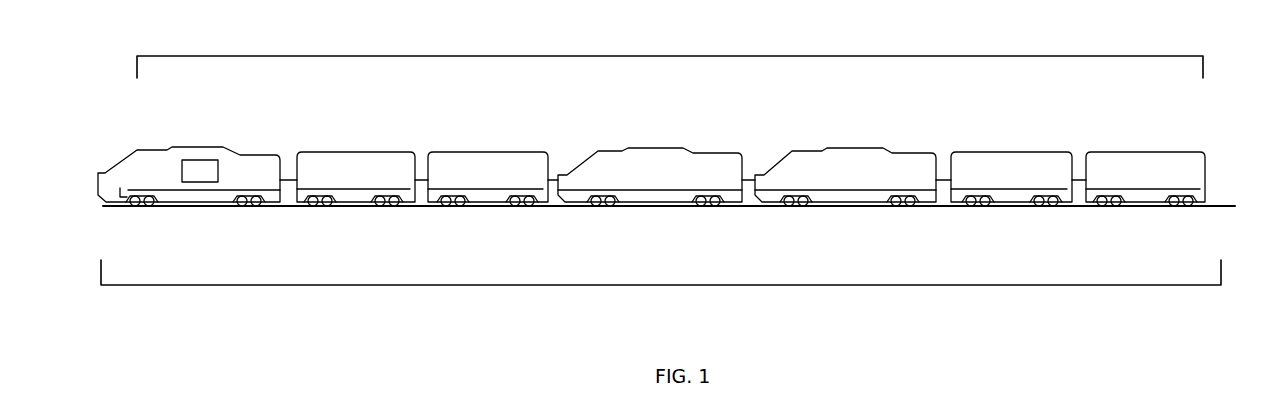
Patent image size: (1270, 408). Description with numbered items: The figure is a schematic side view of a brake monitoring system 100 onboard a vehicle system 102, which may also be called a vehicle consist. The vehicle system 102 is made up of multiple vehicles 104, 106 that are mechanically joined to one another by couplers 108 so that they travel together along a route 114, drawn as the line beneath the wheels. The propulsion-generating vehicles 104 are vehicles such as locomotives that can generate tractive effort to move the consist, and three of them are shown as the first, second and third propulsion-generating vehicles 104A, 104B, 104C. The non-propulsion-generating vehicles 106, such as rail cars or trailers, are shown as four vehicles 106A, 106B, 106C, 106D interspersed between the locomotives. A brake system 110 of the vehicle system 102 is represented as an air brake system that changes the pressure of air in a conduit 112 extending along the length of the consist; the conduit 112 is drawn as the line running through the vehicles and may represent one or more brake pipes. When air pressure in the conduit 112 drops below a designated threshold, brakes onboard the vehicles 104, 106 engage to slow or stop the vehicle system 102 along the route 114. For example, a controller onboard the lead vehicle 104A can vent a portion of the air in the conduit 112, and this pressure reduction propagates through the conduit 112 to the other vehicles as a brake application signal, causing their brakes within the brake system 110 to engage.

The brake monitoring system 100 is at (193, 158).
The vehicle system 102 is at (670, 285).
The propulsion-generating vehicle 104 is at (202, 140).
The first propulsion-generating vehicle 104A is at (257, 150).
The second propulsion-generating vehicle 104B is at (655, 150).
The third propulsion-generating vehicle 104C is at (852, 148).
The non-propulsion-generating vehicle 106 is at (371, 140).
The first non-propulsion-generating vehicle 106A is at (383, 150).
The second non-propulsion-generating vehicle 106B is at (520, 150).
The third non-propulsion-generating vehicle 106C is at (1018, 150).
The fourth non-propulsion-generating vehicle 106D is at (1147, 150).
The coupler 108 is at (748, 176).
The brake system 110 is at (670, 56).
The conduit 112 is at (1012, 190).
The route 114 is at (1223, 208).